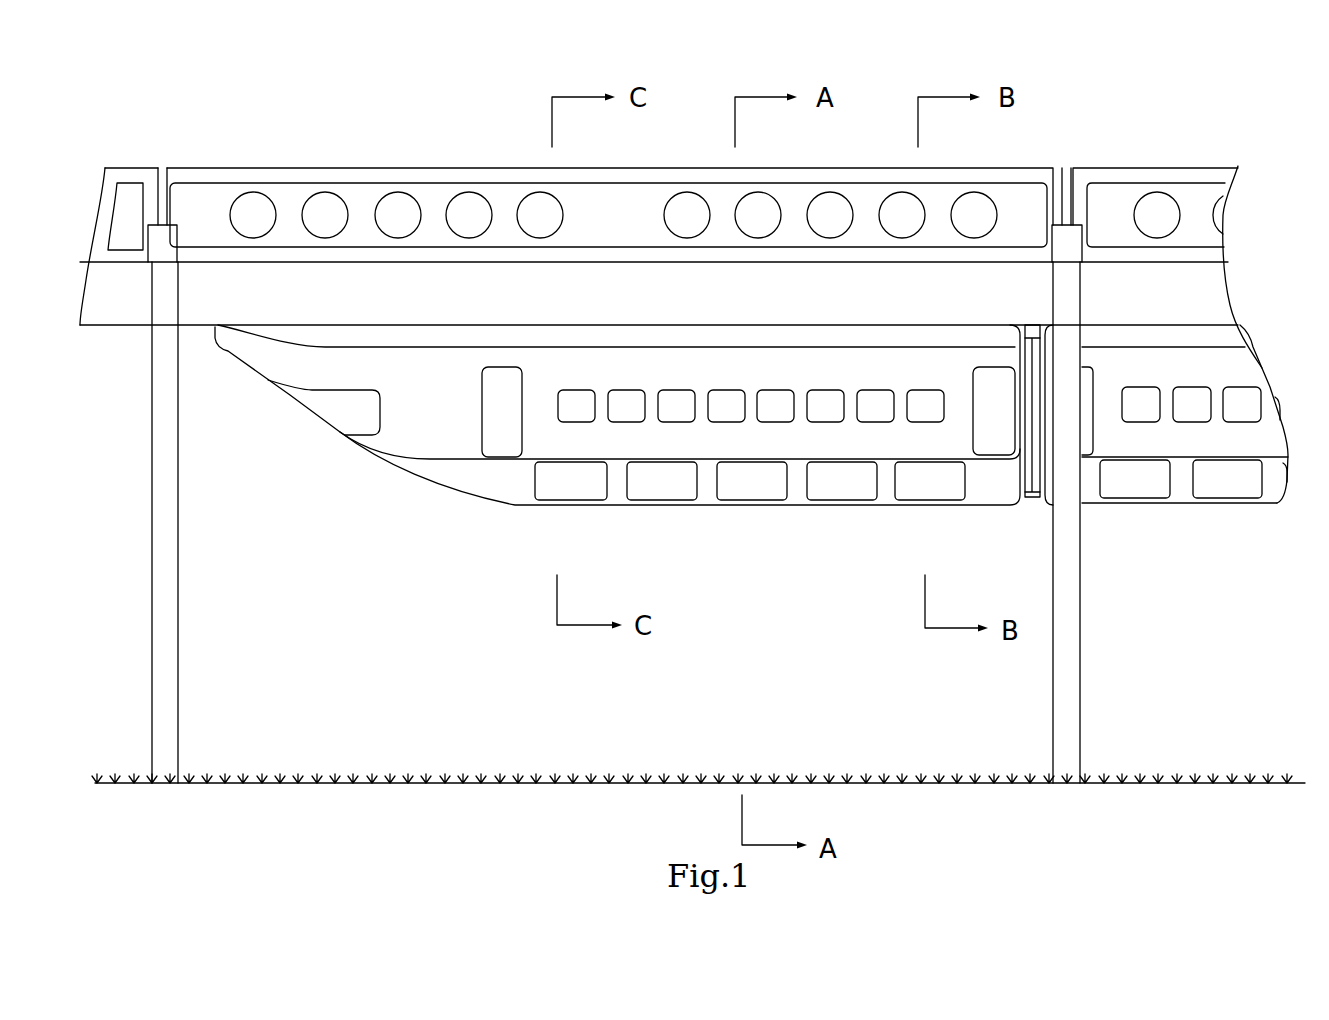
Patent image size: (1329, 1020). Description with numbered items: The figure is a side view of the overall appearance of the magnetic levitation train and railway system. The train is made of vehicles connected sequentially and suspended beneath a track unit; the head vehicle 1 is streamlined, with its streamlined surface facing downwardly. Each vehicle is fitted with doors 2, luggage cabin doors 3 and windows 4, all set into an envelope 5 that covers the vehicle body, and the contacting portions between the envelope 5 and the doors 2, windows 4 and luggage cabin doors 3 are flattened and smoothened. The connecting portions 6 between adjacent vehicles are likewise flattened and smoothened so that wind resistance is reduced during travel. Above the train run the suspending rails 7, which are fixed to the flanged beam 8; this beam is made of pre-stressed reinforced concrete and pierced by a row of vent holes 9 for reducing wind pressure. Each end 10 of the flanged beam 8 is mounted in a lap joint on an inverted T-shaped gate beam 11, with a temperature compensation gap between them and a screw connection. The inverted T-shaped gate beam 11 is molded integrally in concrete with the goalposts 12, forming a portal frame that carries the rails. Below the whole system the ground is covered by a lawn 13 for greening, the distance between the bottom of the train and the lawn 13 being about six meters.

The head vehicle 1 is at (617, 454).
The doors 2 is at (505, 430).
The luggage cabin doors 3 is at (750, 482).
The windows 4 is at (875, 410).
The envelope 5 is at (707, 442).
The connecting portions 6 is at (1038, 498).
The suspending rails 7 is at (198, 307).
The flanged beam 8 is at (293, 168).
The vent holes 9 is at (403, 217).
The end of the flanged beam 10 is at (1080, 195).
The inverted T-shaped gate beam 11 is at (1063, 178).
The goalposts 12 is at (1070, 653).
The lawn 13 is at (1213, 763).